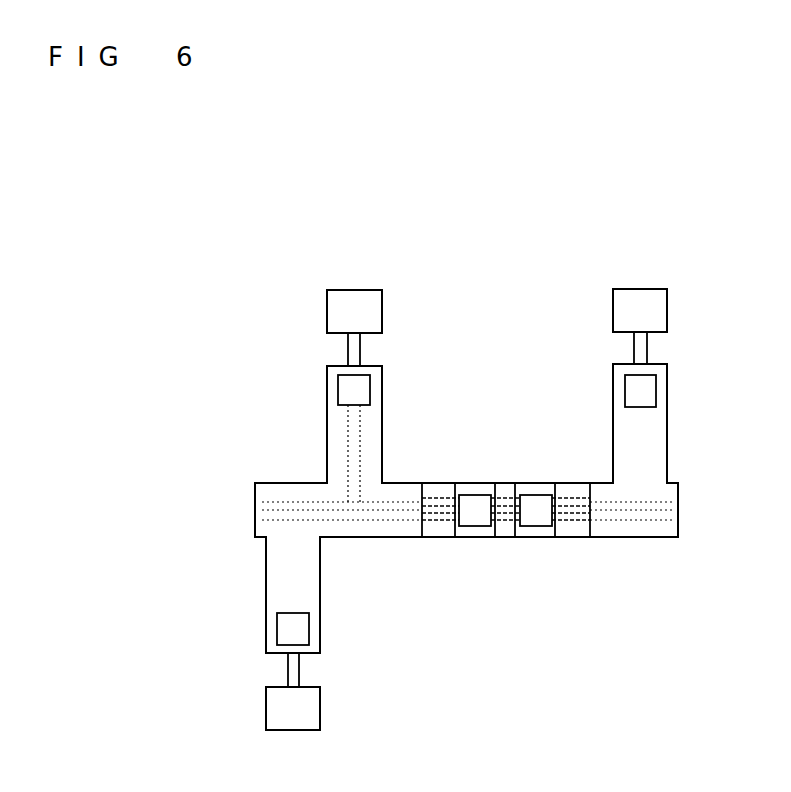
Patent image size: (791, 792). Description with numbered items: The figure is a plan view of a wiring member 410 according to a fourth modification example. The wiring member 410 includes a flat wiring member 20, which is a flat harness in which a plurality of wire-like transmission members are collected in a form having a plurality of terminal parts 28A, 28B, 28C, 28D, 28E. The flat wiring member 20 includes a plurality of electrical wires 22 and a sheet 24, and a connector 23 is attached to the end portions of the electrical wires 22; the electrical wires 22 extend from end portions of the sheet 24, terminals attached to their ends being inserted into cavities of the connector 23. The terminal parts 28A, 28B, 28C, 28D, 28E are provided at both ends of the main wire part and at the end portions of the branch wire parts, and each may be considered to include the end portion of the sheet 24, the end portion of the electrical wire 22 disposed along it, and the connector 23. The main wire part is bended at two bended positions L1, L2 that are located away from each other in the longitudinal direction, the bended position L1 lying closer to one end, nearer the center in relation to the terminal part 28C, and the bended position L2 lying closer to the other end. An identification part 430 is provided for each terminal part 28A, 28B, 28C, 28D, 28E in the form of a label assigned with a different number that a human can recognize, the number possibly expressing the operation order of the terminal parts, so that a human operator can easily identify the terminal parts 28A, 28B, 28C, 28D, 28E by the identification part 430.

The wiring member 410 is at (515, 318).
The flat wiring member 20 is at (437, 540).
The electrical wire 22 is at (300, 660).
The connector 23 is at (637, 289).
The sheet 24 is at (575, 528).
The terminal part 28A is at (412, 483).
The terminal part 28B is at (382, 368).
The terminal part 28C is at (320, 630).
The terminal part 28D is at (667, 377).
The terminal part 28E is at (537, 540).
The identification part 430 is at (338, 390).
The bended position L1 is at (255, 500).
The bended position L2 is at (678, 497).